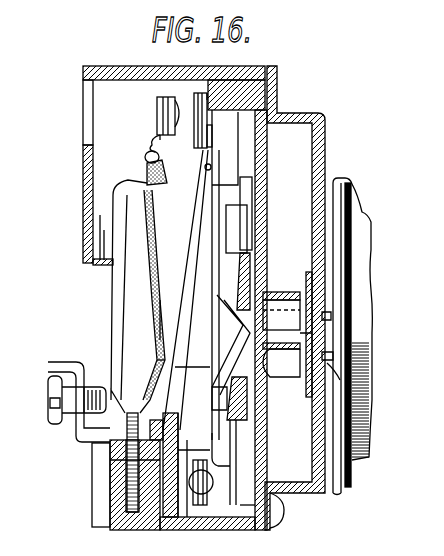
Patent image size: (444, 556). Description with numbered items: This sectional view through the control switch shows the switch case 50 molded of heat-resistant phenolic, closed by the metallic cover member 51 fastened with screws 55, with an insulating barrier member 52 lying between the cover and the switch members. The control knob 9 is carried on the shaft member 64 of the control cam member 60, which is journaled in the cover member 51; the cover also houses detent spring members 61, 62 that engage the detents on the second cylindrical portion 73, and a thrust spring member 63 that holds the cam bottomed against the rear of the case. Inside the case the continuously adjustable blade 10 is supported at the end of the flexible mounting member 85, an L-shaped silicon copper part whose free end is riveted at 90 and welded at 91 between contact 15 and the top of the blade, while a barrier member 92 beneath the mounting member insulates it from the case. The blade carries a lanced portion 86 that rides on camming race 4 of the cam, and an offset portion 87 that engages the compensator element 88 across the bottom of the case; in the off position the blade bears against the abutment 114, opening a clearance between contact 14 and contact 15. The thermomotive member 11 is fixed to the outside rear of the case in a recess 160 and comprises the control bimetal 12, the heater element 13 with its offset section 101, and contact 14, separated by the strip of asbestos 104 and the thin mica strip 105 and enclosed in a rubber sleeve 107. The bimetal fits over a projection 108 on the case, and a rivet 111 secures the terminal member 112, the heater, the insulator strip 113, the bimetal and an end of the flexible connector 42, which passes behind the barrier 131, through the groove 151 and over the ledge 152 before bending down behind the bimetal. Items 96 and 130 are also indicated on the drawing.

The camming race 4 is at (243, 313).
The control knob 9 is at (351, 204).
The continuously adjustable blade 10 is at (210, 226).
The thermomotive member 11 is at (154, 262).
The control bimetal 12 is at (165, 118).
The heater element 13 is at (130, 502).
The electrical contact 14 is at (178, 97).
The contact 15 is at (192, 97).
The flexible connector 42 is at (113, 380).
The switch case 50 is at (106, 66).
The cover member 51 is at (323, 127).
The barrier member 52 is at (268, 156).
The screws 55 is at (281, 515).
The control cam member 60 is at (247, 193).
The detent spring member 61 is at (273, 297).
The detent spring member 62 is at (273, 376).
The thrust spring member 63 is at (311, 283).
The shaft member 64 is at (371, 382).
The second cylindrical portion 73 is at (300, 333).
The flexible mounting member 85 is at (183, 385).
The lanced portion 86 is at (257, 396).
The offset portion 87 is at (253, 456).
The compensator element 88 is at (217, 522).
The rivet 90 is at (205, 165).
The weld 91 is at (207, 130).
The barrier member 92 is at (172, 527).
The bottom wall 96 is at (250, 527).
The offset section 101 is at (146, 158).
The strip of asbestos 104 is at (150, 147).
The mica strip 105 is at (147, 170).
The sleeve 107 is at (143, 227).
The projection 108 is at (120, 483).
The rivet 111 is at (138, 469).
The terminal member 112 is at (53, 366).
The insulator strip 113 is at (120, 531).
The abutment 114 is at (203, 78).
The lead 130 is at (430, 510).
The barrier 131 is at (177, 367).
The groove 151 is at (165, 372).
The ledge 152 is at (120, 449).
The recess 160 is at (152, 528).